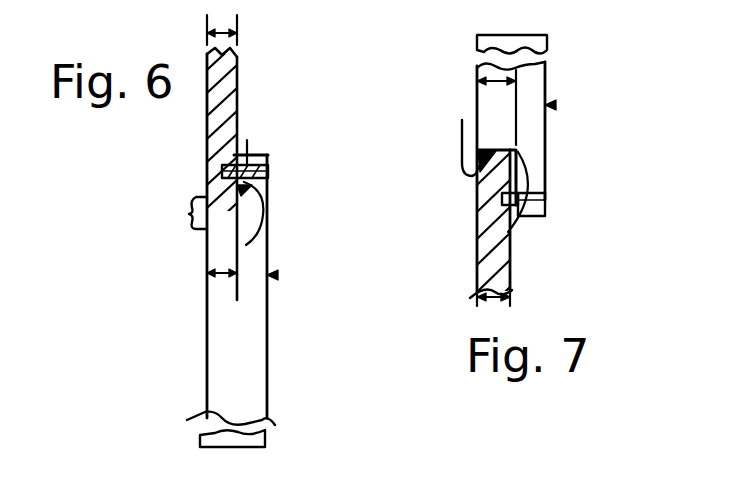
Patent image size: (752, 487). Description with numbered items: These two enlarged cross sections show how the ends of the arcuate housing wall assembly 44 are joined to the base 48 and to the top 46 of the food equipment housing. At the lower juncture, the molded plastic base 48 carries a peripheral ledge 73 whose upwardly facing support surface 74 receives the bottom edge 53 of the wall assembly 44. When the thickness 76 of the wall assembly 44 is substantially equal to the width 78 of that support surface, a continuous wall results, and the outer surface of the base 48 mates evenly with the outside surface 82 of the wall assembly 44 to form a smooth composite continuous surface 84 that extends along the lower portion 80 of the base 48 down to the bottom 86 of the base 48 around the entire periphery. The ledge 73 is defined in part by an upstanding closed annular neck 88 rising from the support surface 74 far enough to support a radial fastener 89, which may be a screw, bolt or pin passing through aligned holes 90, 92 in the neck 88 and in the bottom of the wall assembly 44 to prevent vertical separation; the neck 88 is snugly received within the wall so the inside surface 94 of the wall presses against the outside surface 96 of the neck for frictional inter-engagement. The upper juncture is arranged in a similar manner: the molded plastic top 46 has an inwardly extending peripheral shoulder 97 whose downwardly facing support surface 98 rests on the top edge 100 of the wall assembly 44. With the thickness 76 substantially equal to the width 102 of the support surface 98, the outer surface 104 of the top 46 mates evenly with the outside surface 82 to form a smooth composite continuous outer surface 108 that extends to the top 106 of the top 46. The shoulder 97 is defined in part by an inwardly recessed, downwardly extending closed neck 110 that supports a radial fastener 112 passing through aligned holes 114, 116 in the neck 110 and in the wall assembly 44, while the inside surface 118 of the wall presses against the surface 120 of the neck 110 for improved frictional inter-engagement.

In FIG. 6, the wall assembly 44 is at (212, 150).
In FIG. 7, the wall assembly 44 is at (477, 272).
In FIG. 7, the top 46 is at (556, 105).
In FIG. 6, the base 48 is at (278, 275).
In FIG. 6, the bottom edge 53 is at (232, 232).
In FIG. 6, the peripheral ledge 73 is at (262, 172).
In FIG. 6, the support surface 74 is at (237, 190).
In FIG. 6, the thickness 76 is at (237, 25).
In FIG. 7, the thickness 76 is at (510, 301).
In FIG. 6, the width of support surface 78 is at (207, 302).
In FIG. 6, the lower portion 80 is at (207, 378).
In FIG. 6, the outside surface 82 is at (210, 111).
In FIG. 7, the outside surface 82 is at (477, 217).
In FIG. 6, the composite continuous surface 84 is at (190, 211).
In FIG. 6, the bottom of base 86 is at (240, 456).
In FIG. 6, the neck 88 is at (251, 153).
In FIG. 6, the radial fastener 89 is at (271, 158).
In FIG. 6, the hole 90 is at (265, 212).
In FIG. 6, the hole 92 is at (232, 172).
In FIG. 6, the inside surface 94 is at (248, 155).
In FIG. 6, the outside surface of neck 96 is at (238, 222).
In FIG. 7, the peripheral shoulder 97 is at (517, 142).
In FIG. 7, the support surface 98 is at (470, 117).
In FIG. 7, the top edge 100 is at (502, 128).
In FIG. 7, the width of support surface 102 is at (495, 78).
In FIG. 7, the outer surface 104 is at (470, 109).
In FIG. 7, the top of the top 106 is at (507, 32).
In FIG. 7, the composite continuous outer surface 108 is at (462, 160).
In FIG. 7, the neck 110 is at (548, 200).
In FIG. 7, the radial fastener 112 is at (522, 188).
In FIG. 7, the hole 114 is at (548, 175).
In FIG. 7, the hole 116 is at (478, 192).
In FIG. 7, the inside surface 118 is at (477, 240).
In FIG. 7, the inside surface of neck 120 is at (478, 184).